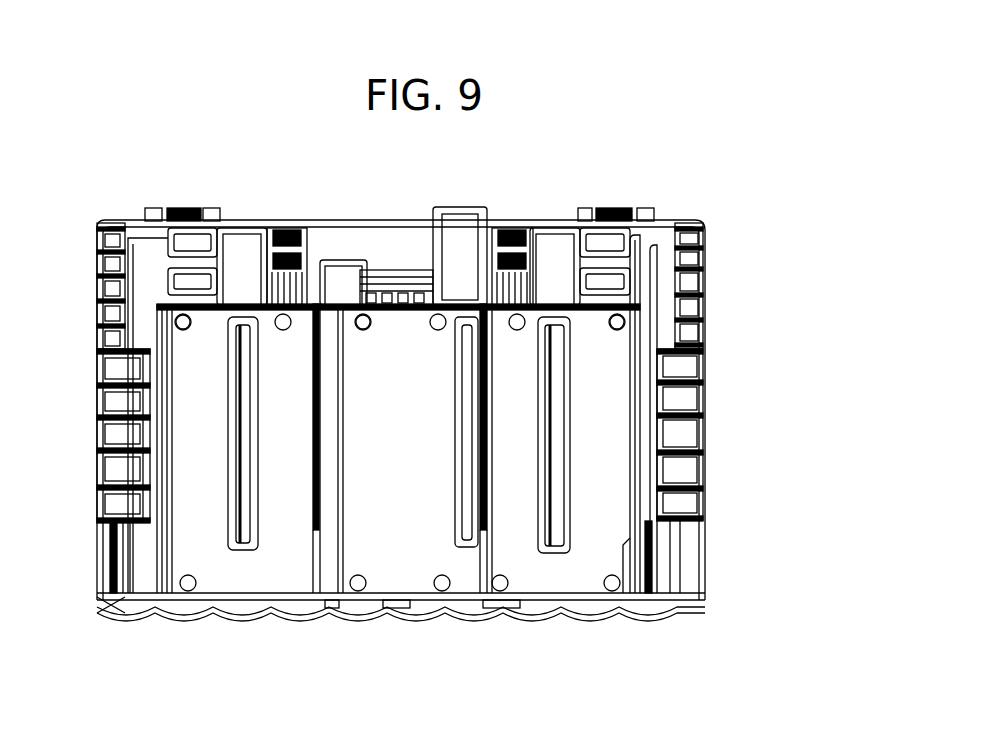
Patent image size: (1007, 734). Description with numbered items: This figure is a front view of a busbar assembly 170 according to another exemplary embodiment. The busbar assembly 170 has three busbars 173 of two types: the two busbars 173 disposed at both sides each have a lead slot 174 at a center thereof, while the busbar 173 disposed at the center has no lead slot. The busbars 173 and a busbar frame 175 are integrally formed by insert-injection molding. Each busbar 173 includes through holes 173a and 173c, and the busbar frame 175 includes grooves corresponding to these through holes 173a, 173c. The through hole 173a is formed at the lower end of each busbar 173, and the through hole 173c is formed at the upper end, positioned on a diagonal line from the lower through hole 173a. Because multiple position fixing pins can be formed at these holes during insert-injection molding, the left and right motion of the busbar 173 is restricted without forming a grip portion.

The busbar assembly 170 is at (712, 253).
The busbar 173 is at (600, 460).
The through hole 173a is at (500, 585).
The through hole 173c is at (612, 317).
The lead slot 174 is at (555, 399).
The busbar frame 175 is at (667, 335).